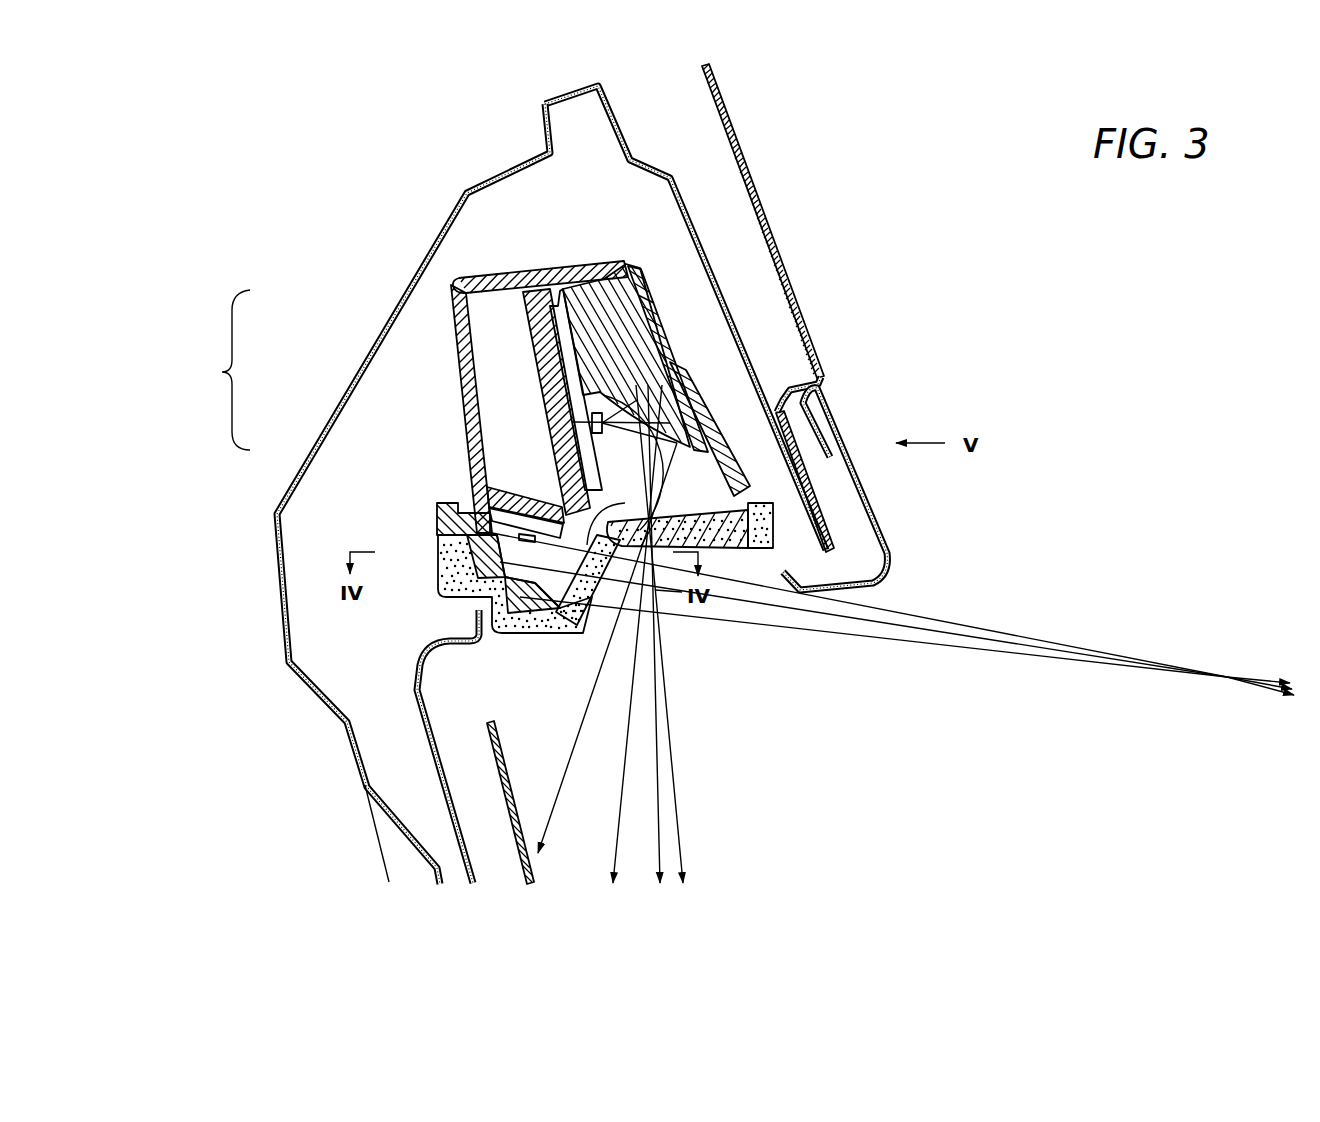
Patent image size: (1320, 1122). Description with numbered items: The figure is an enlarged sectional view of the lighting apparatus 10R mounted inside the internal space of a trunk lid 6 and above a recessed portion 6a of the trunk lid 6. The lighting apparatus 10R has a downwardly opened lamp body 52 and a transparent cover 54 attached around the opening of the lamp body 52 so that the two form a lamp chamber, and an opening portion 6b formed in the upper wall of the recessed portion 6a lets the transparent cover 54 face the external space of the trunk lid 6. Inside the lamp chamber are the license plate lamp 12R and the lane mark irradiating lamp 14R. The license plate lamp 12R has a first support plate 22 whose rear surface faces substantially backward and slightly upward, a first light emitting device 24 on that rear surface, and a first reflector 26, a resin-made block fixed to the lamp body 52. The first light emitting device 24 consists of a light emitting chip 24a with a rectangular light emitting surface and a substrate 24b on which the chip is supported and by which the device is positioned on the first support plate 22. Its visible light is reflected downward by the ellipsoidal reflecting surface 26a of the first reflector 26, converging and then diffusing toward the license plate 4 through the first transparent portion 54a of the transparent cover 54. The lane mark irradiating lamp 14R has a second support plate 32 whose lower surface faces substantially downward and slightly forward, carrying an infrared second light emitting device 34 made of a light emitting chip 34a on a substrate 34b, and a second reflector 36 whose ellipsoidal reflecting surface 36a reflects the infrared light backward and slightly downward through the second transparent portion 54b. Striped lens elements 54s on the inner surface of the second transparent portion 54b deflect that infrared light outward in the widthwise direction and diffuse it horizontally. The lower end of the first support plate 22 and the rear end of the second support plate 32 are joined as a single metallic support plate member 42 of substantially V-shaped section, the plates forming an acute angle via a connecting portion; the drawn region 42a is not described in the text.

The lighting apparatus 10R is at (483, 243).
The trunk lid 6 is at (754, 161).
The recessed portion 6a is at (443, 768).
The opening portion 6b is at (785, 578).
The license plate 4 is at (540, 869).
The license plate lamp 12R is at (752, 451).
The lane mark irradiating lamp 14R is at (435, 597).
The first support plate 22 is at (538, 363).
The first light emitting device 24 is at (593, 292).
The light emitting chip 24a is at (575, 422).
The substrate 24b is at (557, 305).
The first reflector 26 is at (692, 384).
The reflecting surface 26a is at (653, 447).
The second support plate 32 is at (487, 490).
The second light emitting device 34 is at (512, 543).
The light emitting chip 34a is at (437, 525).
The substrate 34b is at (468, 520).
The second reflector 36 is at (508, 548).
The reflecting surface 36a is at (580, 613).
The support plate member 42 is at (215, 370).
The attachment flange 42a is at (552, 488).
The lamp body 52 is at (670, 302).
The transparent cover 54 is at (784, 548).
The first transparent portion 54a is at (715, 548).
The second transparent portion 54b is at (553, 550).
The striped lens elements 54s is at (625, 503).